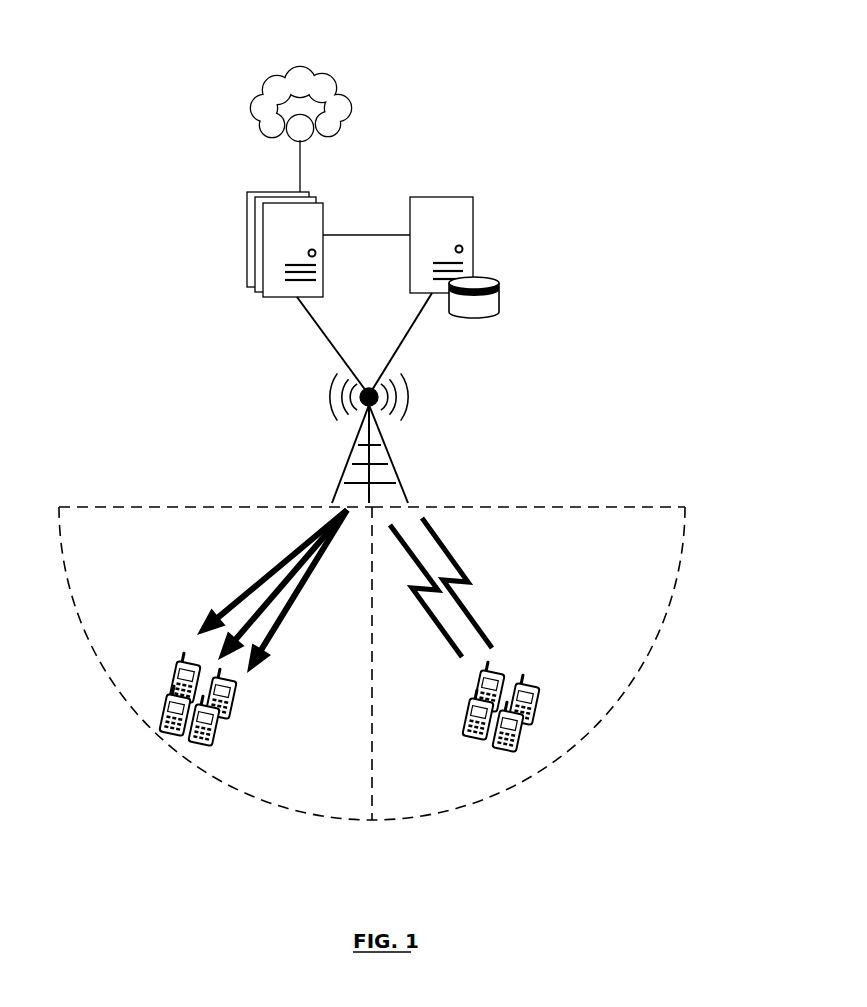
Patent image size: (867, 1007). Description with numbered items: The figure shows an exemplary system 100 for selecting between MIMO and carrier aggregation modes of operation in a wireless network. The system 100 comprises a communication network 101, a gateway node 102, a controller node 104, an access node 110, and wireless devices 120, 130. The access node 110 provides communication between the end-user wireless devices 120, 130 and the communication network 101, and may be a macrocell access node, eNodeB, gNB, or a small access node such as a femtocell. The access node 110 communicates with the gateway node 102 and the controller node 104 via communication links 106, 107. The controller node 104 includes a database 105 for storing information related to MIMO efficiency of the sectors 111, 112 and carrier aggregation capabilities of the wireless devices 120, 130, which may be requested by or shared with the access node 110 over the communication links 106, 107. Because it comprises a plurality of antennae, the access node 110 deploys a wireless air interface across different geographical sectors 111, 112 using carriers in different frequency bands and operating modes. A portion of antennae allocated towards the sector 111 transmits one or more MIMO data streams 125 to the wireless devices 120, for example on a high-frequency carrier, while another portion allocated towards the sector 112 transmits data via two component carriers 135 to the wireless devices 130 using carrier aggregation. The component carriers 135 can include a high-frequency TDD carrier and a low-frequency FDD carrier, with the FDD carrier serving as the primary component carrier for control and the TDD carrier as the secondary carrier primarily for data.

The system 100 is at (483, 52).
The communication network 101 is at (316, 118).
The gateway node 102 is at (258, 192).
The controller node 104 is at (473, 197).
The database 105 is at (497, 278).
The communication link 106 is at (405, 332).
The communication link 107 is at (312, 320).
The access node 110 is at (348, 472).
The sector 111 is at (217, 505).
The sector 112 is at (590, 505).
The wireless devices 120 is at (240, 740).
The MIMO data streams 125 is at (214, 586).
The wireless devices 130 is at (472, 752).
The component carriers 135 is at (483, 556).